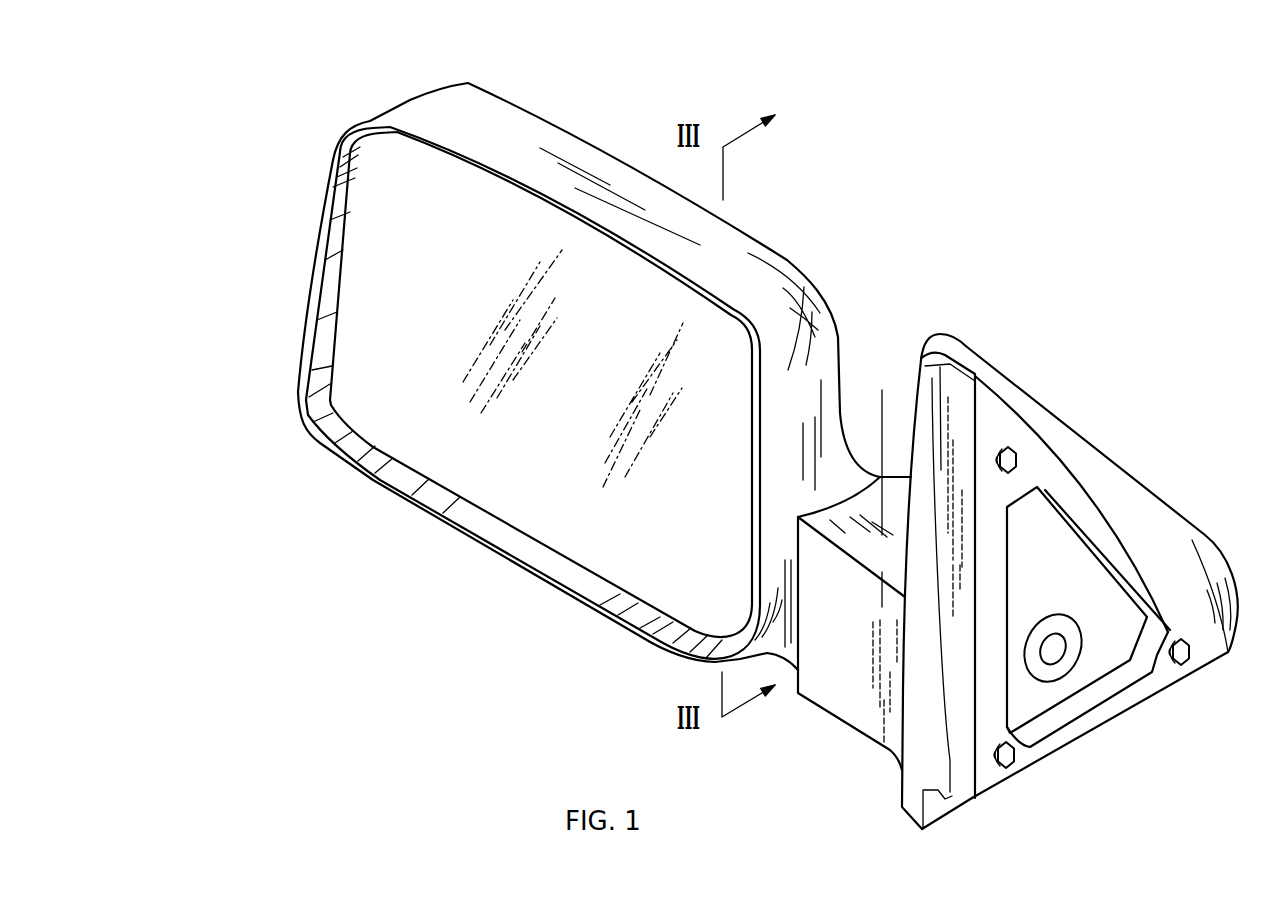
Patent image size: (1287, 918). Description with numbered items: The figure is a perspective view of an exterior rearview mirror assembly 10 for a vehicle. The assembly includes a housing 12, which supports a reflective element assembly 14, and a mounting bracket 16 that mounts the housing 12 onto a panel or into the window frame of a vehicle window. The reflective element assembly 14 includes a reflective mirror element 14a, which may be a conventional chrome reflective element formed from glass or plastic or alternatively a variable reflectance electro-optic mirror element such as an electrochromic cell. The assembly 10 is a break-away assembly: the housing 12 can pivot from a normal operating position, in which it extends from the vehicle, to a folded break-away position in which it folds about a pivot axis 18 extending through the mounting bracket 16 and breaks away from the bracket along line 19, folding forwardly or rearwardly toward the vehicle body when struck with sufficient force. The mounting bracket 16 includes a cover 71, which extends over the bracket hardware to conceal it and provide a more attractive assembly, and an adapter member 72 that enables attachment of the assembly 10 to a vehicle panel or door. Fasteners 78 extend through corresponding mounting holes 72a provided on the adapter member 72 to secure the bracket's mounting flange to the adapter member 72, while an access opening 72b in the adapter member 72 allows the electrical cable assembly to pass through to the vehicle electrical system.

The exterior rearview mirror assembly 10 is at (831, 217).
The housing 12 is at (478, 102).
The reflective element assembly 14 is at (352, 288).
The reflective mirror element 14a is at (378, 420).
The mounting bracket 16 is at (999, 355).
The pivot axis 18 is at (885, 410).
The break-away line 19 is at (843, 503).
The cover 71 is at (1173, 503).
The adapter member 72 is at (1132, 700).
The mounting holes 72a is at (1183, 637).
The access opening 72b is at (1070, 630).
The fasteners 78 is at (1018, 460).